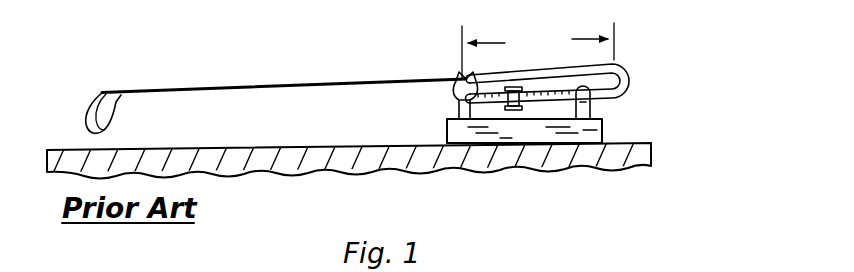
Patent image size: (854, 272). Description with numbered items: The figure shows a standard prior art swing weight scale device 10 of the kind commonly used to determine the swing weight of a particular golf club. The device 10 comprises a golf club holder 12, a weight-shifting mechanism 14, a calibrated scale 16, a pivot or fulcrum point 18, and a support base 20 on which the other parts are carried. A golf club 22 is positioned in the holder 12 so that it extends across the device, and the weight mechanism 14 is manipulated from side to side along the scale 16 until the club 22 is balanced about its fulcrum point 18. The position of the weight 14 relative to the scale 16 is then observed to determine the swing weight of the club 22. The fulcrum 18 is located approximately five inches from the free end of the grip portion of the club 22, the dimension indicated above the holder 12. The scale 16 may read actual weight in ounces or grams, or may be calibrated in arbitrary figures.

The swing weight scale device 10 is at (299, 58).
The golf club holder 12 is at (636, 78).
The weight-shifting mechanism 14 is at (512, 109).
The calibrated scale 16 is at (566, 97).
The pivot or fulcrum point 18 is at (460, 82).
The support base 20 is at (588, 129).
The golf club 22 is at (208, 90).